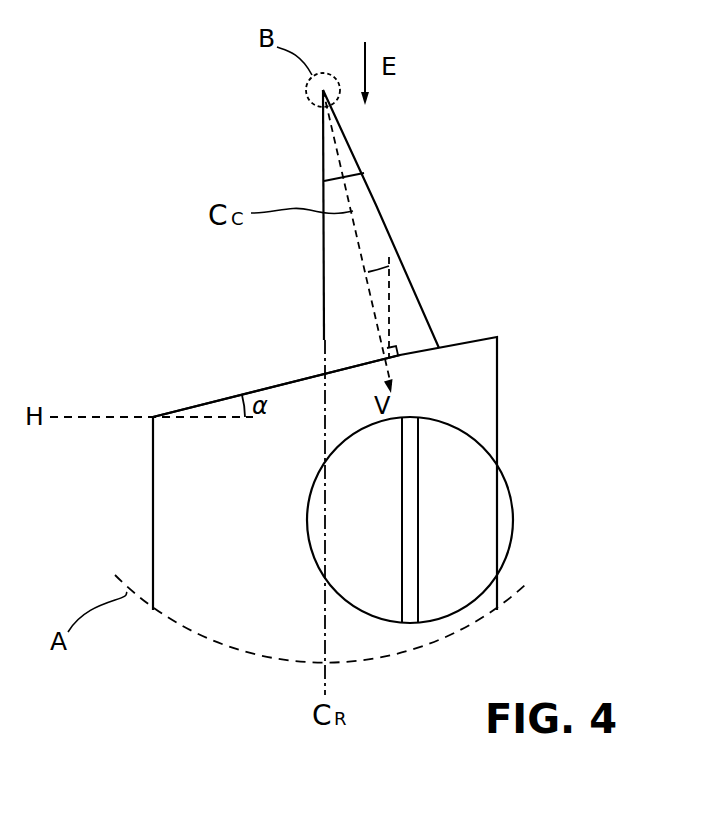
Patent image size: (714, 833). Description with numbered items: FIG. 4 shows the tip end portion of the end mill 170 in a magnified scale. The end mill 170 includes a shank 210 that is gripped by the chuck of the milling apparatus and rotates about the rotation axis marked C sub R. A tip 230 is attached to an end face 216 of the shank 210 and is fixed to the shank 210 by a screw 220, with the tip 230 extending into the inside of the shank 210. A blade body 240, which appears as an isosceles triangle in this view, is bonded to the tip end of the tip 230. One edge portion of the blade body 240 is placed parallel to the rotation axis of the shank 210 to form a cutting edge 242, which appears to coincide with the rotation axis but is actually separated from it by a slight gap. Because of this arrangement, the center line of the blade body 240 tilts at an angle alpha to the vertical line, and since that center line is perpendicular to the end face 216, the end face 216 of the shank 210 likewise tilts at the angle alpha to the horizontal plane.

The end mill 170 is at (100, 74).
The cutting edge 242 is at (323, 138).
The blade body 240 is at (350, 148).
The tip 230 is at (372, 201).
The shank 210 is at (483, 391).
The end face 216 is at (192, 406).
The screw 220 is at (495, 533).